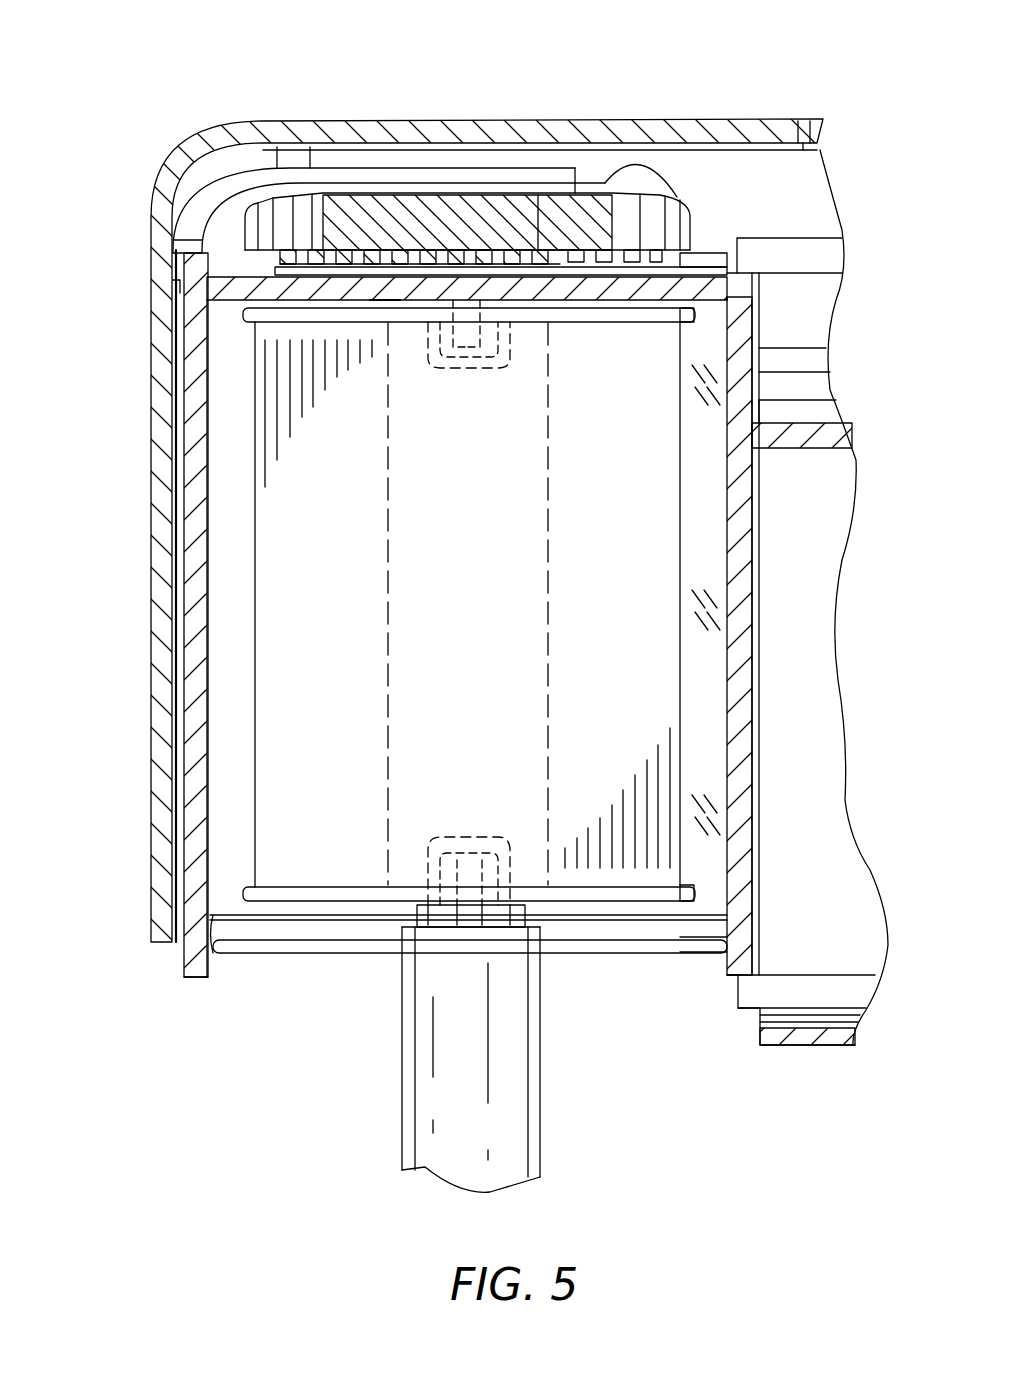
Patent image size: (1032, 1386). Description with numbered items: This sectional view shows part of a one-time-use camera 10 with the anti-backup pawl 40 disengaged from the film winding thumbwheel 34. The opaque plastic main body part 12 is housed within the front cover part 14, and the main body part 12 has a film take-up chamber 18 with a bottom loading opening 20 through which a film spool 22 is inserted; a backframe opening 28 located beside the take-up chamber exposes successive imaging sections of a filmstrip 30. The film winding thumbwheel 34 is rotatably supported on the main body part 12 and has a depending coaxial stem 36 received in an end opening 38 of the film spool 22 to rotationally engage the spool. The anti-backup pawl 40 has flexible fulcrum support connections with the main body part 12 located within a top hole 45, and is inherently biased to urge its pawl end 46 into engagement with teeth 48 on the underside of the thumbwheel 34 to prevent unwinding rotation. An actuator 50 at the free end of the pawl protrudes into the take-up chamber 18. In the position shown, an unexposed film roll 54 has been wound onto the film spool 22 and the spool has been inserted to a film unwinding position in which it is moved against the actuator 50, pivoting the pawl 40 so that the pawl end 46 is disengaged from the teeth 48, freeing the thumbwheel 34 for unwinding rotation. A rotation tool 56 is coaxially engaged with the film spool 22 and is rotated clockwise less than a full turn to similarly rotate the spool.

The one-time-use camera 10 is at (206, 104).
The main body part 12 is at (200, 992).
The front cover part 14 is at (142, 776).
The film take-up chamber 18 is at (222, 838).
The bottom loading opening 20 is at (252, 946).
The film spool 22 is at (243, 318).
The backframe opening 28 is at (828, 662).
The filmstrip 30 is at (708, 518).
The film winding thumbwheel 34 is at (245, 222).
The depending coaxial stem 36 is at (500, 338).
The end opening 38 is at (490, 375).
The anti-backup pawl 40 is at (426, 256).
The top hole 45 is at (357, 314).
The pawl end 46 is at (553, 268).
The teeth 48 is at (590, 270).
The actuator 50 is at (387, 300).
The unexposed film roll 54 is at (690, 665).
The rotation tool 56 is at (525, 1098).